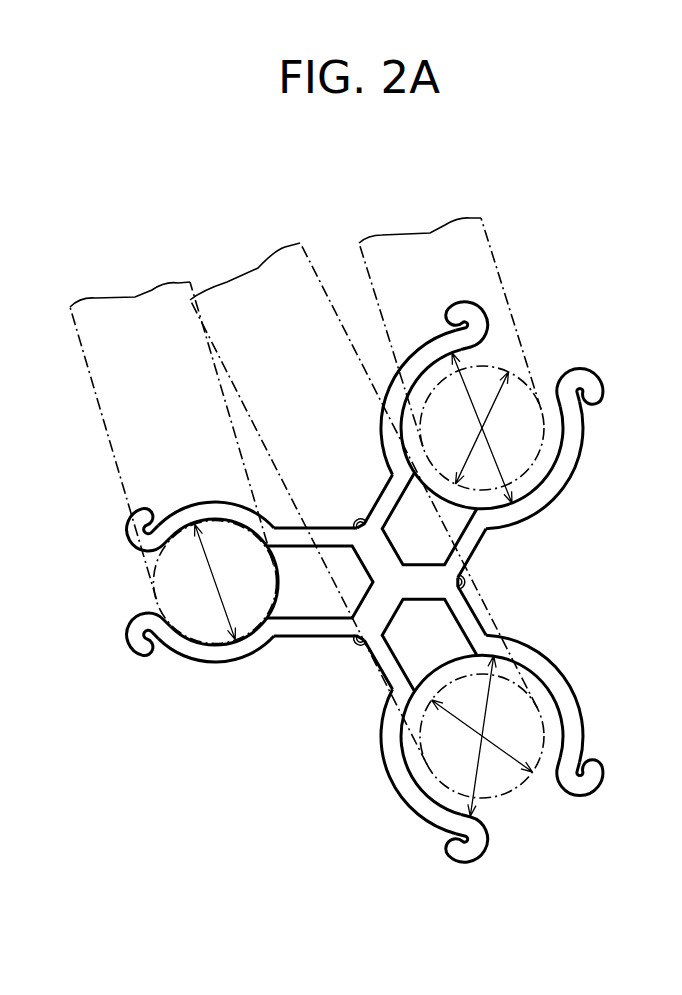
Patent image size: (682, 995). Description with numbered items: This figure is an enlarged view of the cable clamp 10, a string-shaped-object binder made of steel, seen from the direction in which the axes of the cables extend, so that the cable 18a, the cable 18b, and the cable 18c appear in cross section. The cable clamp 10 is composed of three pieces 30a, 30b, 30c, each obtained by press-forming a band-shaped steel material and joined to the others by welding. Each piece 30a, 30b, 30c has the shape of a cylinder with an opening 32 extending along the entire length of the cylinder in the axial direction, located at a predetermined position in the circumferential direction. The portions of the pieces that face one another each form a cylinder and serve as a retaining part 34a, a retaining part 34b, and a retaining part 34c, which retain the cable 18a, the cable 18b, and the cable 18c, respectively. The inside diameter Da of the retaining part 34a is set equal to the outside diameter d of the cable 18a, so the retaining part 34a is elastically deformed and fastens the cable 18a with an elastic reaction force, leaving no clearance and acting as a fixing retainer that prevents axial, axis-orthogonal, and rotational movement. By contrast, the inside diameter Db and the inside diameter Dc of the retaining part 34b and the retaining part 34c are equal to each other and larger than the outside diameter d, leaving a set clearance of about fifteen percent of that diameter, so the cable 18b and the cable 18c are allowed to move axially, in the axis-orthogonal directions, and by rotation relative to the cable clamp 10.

The cable clamp 10 is at (608, 563).
The cable 18a is at (147, 568).
The cable 18b is at (512, 790).
The cable 18c is at (527, 338).
The piece 30a is at (259, 641).
The piece 30b is at (383, 731).
The piece 30c is at (523, 515).
The opening 32 is at (150, 547).
The retaining part 34a is at (195, 612).
The retaining part 34b is at (425, 775).
The retaining part 34c is at (540, 463).
The outside diameter d is at (472, 447).
The inside diameter Da is at (218, 592).
The inside diameter Db is at (487, 707).
The inside diameter Dc is at (469, 397).